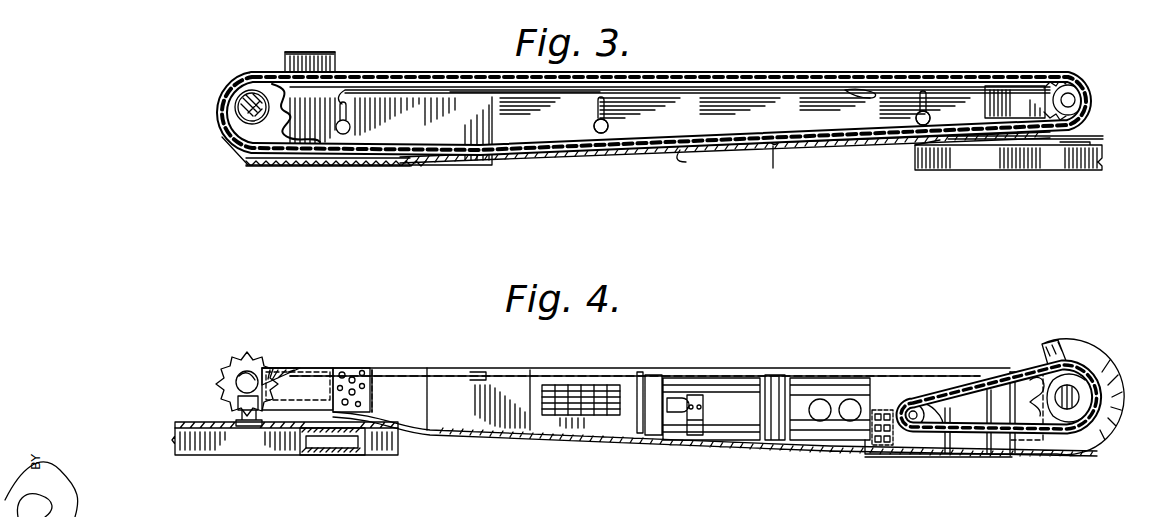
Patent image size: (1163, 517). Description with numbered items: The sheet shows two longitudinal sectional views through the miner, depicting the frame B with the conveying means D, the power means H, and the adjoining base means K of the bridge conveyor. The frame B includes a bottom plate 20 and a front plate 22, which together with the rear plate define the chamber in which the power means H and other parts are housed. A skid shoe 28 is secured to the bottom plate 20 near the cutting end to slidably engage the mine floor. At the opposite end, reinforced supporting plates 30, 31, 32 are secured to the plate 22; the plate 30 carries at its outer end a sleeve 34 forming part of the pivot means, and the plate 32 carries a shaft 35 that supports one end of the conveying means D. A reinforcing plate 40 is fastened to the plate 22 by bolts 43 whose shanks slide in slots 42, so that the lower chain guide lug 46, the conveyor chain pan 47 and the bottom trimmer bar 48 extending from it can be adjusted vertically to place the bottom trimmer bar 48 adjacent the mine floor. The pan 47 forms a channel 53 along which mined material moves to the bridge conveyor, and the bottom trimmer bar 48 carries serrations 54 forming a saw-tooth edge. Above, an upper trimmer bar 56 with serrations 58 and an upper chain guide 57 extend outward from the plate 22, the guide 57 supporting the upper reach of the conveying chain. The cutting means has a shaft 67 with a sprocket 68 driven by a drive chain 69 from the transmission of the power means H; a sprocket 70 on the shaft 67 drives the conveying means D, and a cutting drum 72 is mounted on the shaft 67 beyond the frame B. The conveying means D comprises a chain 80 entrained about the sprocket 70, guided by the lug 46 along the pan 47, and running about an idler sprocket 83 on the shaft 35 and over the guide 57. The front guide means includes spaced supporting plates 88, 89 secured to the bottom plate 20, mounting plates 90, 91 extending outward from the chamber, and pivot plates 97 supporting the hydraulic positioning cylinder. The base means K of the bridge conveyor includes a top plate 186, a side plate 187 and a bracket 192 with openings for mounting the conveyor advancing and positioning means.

In FIG. 4, the bottom plate 20 is at (646, 437).
In FIG. 3, the front plate 22 is at (340, 90).
In FIG. 3, the skid shoe 28 is at (462, 168).
In FIG. 4, the skid shoe 28 is at (898, 458).
In FIG. 4, the reinforced supporting plate 30 is at (335, 380).
In FIG. 4, the reinforced supporting plate 31 is at (312, 384).
In FIG. 3, the reinforced supporting plate 32 is at (1015, 88).
In FIG. 4, the reinforced supporting plate 32 is at (280, 372).
In FIG. 4, the sleeve 34 is at (240, 414).
In FIG. 3, the shaft 35 is at (1070, 100).
In FIG. 4, the shaft 35 is at (238, 380).
In FIG. 3, the reinforcing plate 40 is at (447, 135).
In FIG. 3, the slots 42 is at (348, 122).
In FIG. 3, the bolts 43 is at (595, 127).
In FIG. 3, the lower chain guide lug 46 is at (315, 142).
In FIG. 3, the conveyor chain pan 47 is at (686, 162).
In FIG. 3, the bottom trimmer bar 48 is at (270, 168).
In FIG. 3, the channel 53 is at (765, 159).
In FIG. 3, the serrations 54 is at (318, 168).
In FIG. 3, the upper trimmer bar 56 is at (327, 47).
In FIG. 3, the upper chain guide 57 is at (440, 92).
In FIG. 4, the upper chain guide 57 is at (948, 378).
In FIG. 3, the serrations 58 is at (308, 52).
In FIG. 3, the shaft 67 is at (243, 106).
In FIG. 4, the shaft 67 is at (1092, 418).
In FIG. 4, the sprocket 68 is at (1044, 364).
In FIG. 4, the drive chain 69 is at (998, 380).
In FIG. 3, the sprocket 70 is at (250, 128).
In FIG. 4, the cutting drum 72 is at (1102, 332).
In FIG. 3, the chain 80 is at (794, 80).
In FIG. 3, the idler sprocket 83 is at (1049, 80).
In FIG. 4, the idler sprocket 83 is at (262, 368).
In FIG. 4, the supporting plate 88 is at (982, 445).
In FIG. 4, the supporting plate 89 is at (1020, 446).
In FIG. 4, the mounting plate 90 is at (1008, 392).
In FIG. 4, the mounting plate 91 is at (1002, 412).
In FIG. 4, the pivot plates 97 is at (1000, 445).
In FIG. 4, the top plate 186 is at (180, 424).
In FIG. 3, the side plate 187 is at (1055, 170).
In FIG. 4, the side plate 187 is at (268, 452).
In FIG. 4, the bracket 192 is at (330, 456).
In FIG. 4, the frame B is at (546, 364).
In FIG. 3, the conveying means D is at (926, 68).
In FIG. 4, the power means H is at (763, 360).
In FIG. 3, the base means K is at (1026, 169).
In FIG. 4, the base means K is at (229, 462).